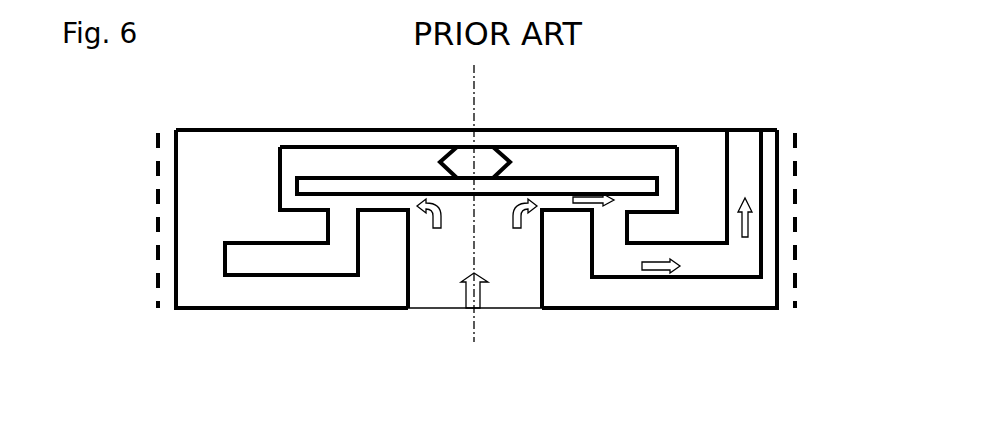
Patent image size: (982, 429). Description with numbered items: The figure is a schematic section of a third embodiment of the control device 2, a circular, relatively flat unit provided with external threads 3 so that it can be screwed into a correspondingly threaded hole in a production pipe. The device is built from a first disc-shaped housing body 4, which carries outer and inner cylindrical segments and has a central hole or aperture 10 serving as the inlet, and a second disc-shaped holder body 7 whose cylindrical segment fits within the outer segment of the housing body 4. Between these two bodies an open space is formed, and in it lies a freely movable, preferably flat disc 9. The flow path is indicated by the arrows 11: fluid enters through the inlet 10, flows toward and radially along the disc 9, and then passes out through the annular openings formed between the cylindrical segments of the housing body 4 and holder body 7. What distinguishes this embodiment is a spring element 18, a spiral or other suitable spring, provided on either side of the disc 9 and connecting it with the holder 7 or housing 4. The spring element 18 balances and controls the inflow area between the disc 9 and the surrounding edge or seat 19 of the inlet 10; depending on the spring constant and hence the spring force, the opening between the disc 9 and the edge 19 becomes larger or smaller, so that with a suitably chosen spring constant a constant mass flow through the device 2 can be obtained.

The control device 2 is at (259, 333).
The external threads 3 is at (792, 143).
The first disc-shaped housing body 4 is at (613, 298).
The second disc-shaped holder body 7 is at (342, 128).
The freely movable disc 9 is at (391, 190).
The central hole or aperture 10 is at (442, 243).
The flow path arrows 11 is at (477, 310).
The spring element 18 is at (492, 163).
The edge or seat of the inlet 19 is at (545, 213).